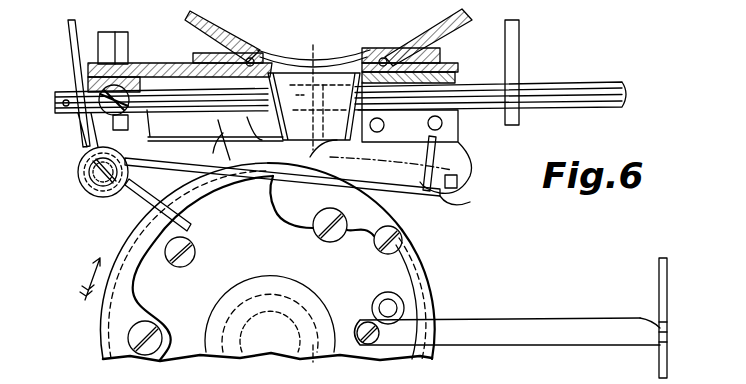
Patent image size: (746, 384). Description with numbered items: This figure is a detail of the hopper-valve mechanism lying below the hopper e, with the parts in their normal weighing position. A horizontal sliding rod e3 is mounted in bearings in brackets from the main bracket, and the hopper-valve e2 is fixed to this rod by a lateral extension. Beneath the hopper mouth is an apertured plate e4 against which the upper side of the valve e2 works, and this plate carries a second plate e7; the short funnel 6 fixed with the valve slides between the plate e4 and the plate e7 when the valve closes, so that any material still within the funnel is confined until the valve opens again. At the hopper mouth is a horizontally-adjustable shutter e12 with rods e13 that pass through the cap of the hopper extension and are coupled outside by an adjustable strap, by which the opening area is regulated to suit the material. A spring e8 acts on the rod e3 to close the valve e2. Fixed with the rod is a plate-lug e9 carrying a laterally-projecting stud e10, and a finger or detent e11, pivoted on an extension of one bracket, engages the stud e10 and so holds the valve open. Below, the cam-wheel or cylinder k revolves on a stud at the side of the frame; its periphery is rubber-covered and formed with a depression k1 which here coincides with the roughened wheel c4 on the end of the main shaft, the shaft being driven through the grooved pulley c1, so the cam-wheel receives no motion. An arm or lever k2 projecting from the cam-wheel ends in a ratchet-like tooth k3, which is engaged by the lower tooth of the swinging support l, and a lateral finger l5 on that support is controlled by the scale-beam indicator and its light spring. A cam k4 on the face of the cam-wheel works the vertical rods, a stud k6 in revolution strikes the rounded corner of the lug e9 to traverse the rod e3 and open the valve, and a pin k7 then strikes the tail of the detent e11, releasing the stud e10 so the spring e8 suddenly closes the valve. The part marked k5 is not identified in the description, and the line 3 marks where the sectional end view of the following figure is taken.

The hopper e is at (283, 112).
The hopper-valve e2 is at (450, 72).
The sliding rod e3 is at (52, 122).
The apertured plate e4 is at (420, 48).
The plate e7 is at (176, 110).
The spring e8 is at (68, 46).
The plate-lug e9 is at (460, 180).
The laterally-projecting stud e10 is at (458, 187).
The finger or detent e11 is at (455, 204).
The horizontally-adjustable shutter e12 is at (340, 58).
The rods e13 is at (388, 36).
The grooved pulley c1 is at (268, 133).
The roughened wheel c4 is at (190, 171).
The cam-wheel or cylinder k is at (176, 346).
The depression k1 is at (237, 281).
The arm or lever k2 is at (510, 313).
The ratchet-like tooth k3 is at (646, 316).
The cam k4 is at (420, 272).
The ring k5 is at (400, 308).
The laterally-projecting stud k6 is at (402, 240).
The pin or stud k7 is at (186, 268).
The swinging support l is at (671, 268).
The lateral projection or finger l5 is at (668, 318).
The section line 3 3 is at (316, 203).
The short funnel 6 is at (302, 103).